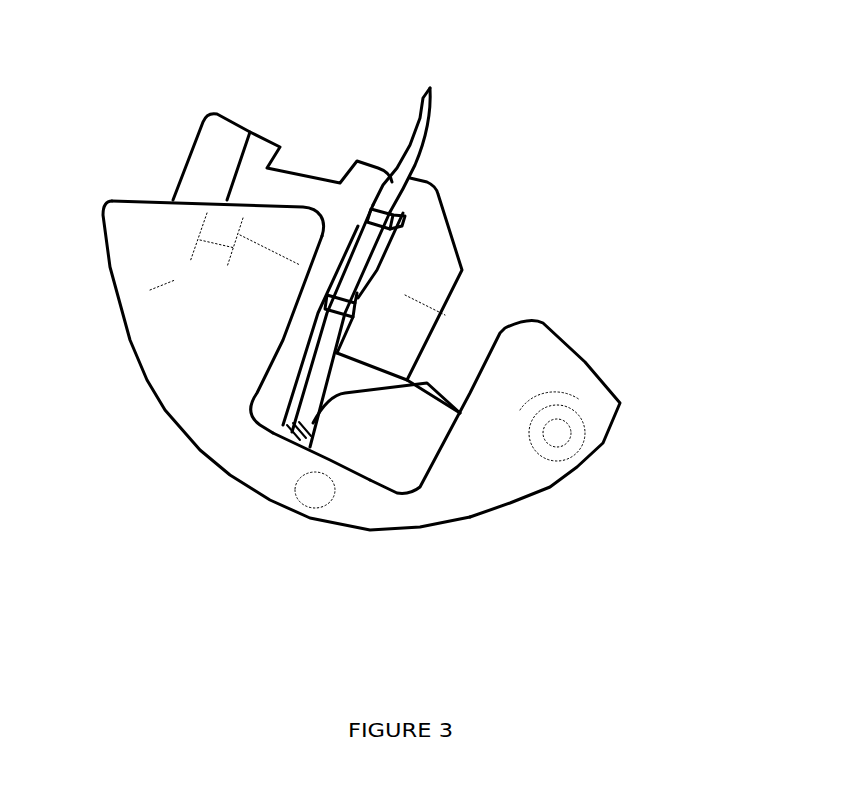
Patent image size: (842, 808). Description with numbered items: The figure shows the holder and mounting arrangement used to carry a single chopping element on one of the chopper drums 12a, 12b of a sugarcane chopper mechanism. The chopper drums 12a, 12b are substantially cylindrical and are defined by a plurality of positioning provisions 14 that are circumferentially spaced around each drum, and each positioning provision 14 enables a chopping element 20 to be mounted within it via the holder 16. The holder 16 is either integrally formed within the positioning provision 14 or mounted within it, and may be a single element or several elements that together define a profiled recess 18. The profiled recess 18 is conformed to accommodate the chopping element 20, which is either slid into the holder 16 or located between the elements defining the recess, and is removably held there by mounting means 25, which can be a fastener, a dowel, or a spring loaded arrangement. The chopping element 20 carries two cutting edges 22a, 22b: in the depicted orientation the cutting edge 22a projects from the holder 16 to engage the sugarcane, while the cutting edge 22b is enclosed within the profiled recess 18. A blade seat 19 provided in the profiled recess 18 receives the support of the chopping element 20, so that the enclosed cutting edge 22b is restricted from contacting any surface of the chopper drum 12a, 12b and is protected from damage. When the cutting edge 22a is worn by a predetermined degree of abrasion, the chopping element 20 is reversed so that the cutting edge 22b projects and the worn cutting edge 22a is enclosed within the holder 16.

The chopper drum 12a is at (617, 387).
The chopper drum 12b is at (617, 387).
The positioning provision 14 is at (480, 313).
The holder 16 is at (318, 170).
The profiled recess 18 is at (290, 433).
The blade seat 19 is at (330, 310).
The chopping element 20 is at (405, 155).
The cutting edge 22a is at (432, 93).
The cutting edge 22b is at (297, 427).
The mounting means 25 is at (202, 172).